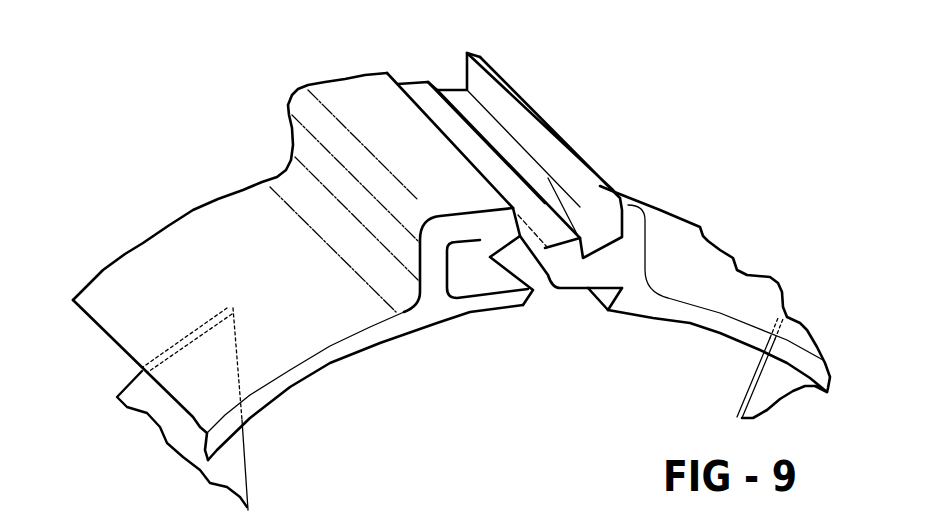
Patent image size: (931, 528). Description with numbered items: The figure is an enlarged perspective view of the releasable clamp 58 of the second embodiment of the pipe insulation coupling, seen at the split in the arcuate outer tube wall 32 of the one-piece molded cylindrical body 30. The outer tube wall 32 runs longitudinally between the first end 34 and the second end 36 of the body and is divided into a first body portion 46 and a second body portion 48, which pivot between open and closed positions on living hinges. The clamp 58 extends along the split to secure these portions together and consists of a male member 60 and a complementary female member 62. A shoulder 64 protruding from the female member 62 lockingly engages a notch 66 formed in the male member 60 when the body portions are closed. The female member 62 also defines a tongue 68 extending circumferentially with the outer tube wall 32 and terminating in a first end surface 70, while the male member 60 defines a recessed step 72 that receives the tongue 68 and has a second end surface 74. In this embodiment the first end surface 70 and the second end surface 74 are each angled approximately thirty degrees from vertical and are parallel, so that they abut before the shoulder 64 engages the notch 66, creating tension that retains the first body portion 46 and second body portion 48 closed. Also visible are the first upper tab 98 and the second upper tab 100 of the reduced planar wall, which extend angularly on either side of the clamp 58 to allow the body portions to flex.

The cylindrical body 30 is at (76, 285).
The outer tube wall 32 is at (248, 228).
The first end 34 is at (177, 221).
The second end 36 is at (321, 360).
The first body portion 46 is at (783, 297).
The second body portion 48 is at (133, 360).
The releasable clamp 58 is at (537, 60).
The male member 60 is at (548, 120).
The female member 62 is at (305, 103).
The shoulder 64 is at (487, 244).
The notch 66 is at (618, 245).
The tongue 68 is at (472, 305).
The first end surface 70 is at (525, 297).
The recessed step 72 is at (572, 291).
The second end surface 74 is at (607, 299).
The first upper tab 98 is at (752, 385).
The second upper tab 100 is at (227, 460).